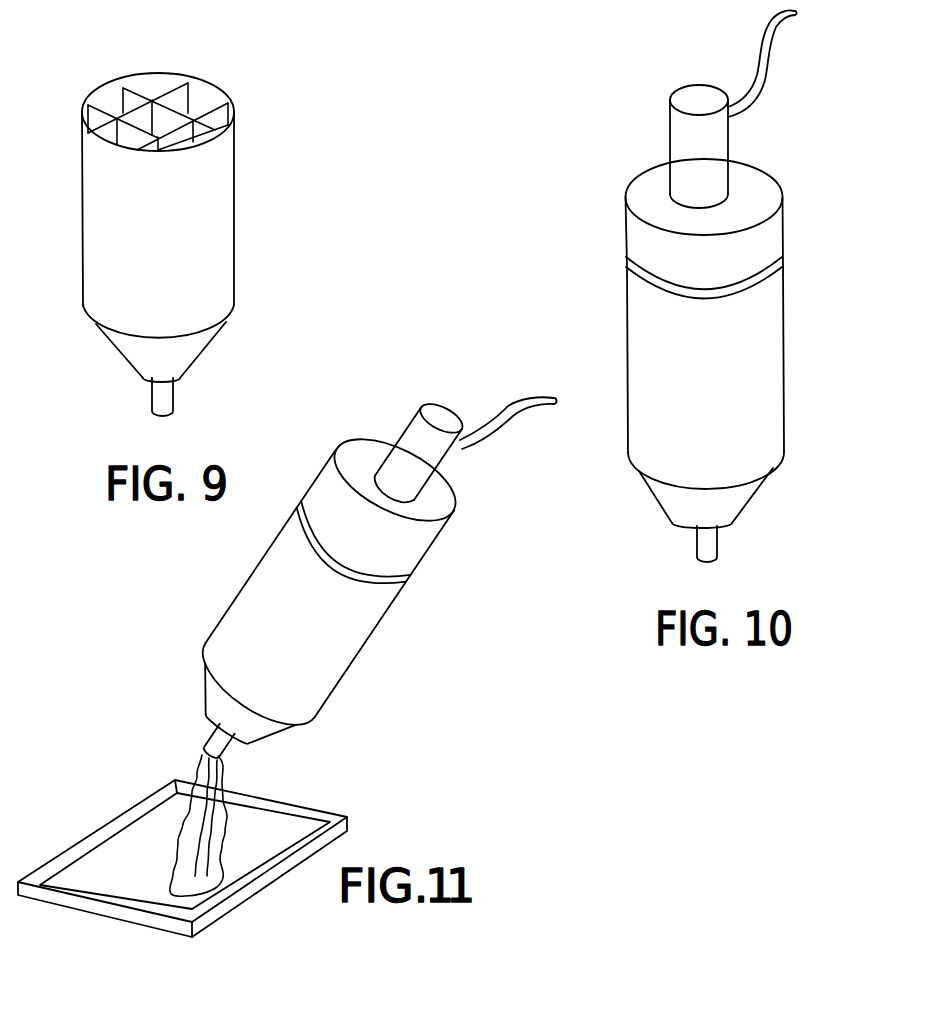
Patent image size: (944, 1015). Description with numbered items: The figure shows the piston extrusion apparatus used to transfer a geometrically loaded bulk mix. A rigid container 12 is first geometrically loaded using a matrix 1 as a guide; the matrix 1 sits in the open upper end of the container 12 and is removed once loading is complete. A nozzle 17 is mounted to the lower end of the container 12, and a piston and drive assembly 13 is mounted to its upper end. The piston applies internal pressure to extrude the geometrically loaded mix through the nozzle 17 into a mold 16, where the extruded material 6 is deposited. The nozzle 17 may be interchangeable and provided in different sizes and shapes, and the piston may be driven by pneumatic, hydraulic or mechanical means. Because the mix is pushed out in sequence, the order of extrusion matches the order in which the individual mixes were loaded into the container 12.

In FIG. 9, the matrix 1 is at (142, 116).
In FIG. 11, the extruded paste 6 is at (213, 848).
In FIG. 9, the rigid container 12 is at (234, 229).
In FIG. 10, the rigid container 12 is at (636, 338).
In FIG. 11, the rigid container 12 is at (363, 636).
In FIG. 10, the piston and drive assembly 13 is at (632, 238).
In FIG. 11, the piston and drive assembly 13 is at (443, 541).
In FIG. 11, the mold 16 is at (67, 848).
In FIG. 9, the nozzle 17 is at (174, 397).
In FIG. 10, the nozzle 17 is at (695, 538).